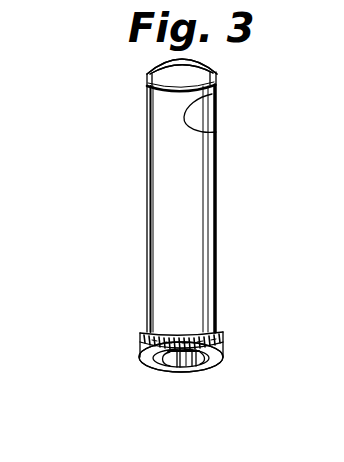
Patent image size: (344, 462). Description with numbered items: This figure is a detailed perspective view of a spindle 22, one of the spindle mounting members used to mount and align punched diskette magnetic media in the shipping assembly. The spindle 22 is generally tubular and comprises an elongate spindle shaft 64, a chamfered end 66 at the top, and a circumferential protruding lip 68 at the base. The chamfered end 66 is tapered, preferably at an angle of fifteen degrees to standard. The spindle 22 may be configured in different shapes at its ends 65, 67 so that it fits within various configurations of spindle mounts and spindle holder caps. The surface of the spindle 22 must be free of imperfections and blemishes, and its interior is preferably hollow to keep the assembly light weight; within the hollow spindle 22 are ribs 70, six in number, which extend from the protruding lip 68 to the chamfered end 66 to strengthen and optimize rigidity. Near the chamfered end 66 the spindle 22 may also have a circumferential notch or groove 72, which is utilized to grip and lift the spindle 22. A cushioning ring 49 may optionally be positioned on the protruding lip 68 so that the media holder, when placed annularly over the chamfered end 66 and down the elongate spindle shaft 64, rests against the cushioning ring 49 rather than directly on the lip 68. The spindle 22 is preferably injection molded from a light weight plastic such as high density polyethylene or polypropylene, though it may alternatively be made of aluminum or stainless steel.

The spindle 22 is at (205, 229).
The cushioning ring 49 is at (228, 335).
The elongate spindle shaft 64 is at (167, 177).
The end 65 is at (142, 59).
The chamfered end 66 is at (213, 71).
The end 67 is at (127, 357).
The circumferential protruding lip 68 is at (217, 355).
The ribs 70 is at (189, 371).
The circumferential notch or groove 72 is at (216, 132).